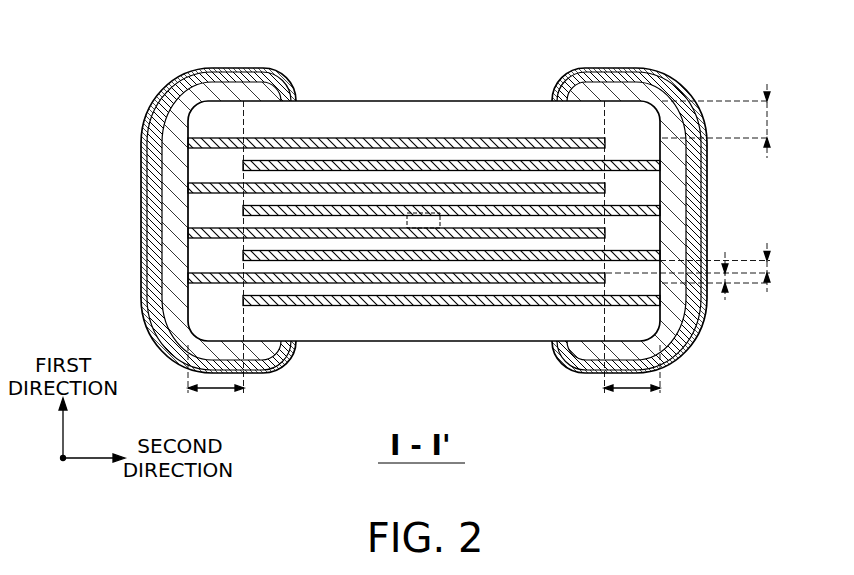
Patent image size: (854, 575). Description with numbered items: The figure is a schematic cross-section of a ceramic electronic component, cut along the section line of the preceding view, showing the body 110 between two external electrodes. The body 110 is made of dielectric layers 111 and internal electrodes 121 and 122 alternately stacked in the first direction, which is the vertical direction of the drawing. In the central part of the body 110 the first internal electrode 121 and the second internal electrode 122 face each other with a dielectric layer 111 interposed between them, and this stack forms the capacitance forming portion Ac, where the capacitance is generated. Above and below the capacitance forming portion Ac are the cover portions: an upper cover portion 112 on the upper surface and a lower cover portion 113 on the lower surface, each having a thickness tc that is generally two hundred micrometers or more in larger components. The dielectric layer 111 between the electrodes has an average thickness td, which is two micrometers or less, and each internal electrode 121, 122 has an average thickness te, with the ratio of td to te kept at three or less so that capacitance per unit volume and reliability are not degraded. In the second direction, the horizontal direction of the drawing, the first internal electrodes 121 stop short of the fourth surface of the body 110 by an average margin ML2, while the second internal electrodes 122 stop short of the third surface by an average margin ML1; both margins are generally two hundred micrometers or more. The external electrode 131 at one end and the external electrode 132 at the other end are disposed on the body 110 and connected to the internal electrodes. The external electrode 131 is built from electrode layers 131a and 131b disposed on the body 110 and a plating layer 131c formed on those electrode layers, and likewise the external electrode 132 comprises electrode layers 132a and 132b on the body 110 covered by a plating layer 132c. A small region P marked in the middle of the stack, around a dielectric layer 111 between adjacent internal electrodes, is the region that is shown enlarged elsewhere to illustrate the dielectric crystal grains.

The body 110 is at (357, 100).
The dielectric layer 111 is at (295, 175).
The upper cover portion 112 is at (420, 106).
The lower cover portion 113 is at (437, 323).
The first internal electrode 121 is at (467, 137).
The second internal electrode 122 is at (537, 160).
The external electrode 131 is at (158, 220).
The electrode layer 131a is at (176, 189).
The electrode layer 131b is at (150, 217).
The plating layer 131c is at (70, 180).
The external electrode 132 is at (694, 220).
The electrode layer 132a is at (674, 178).
The electrode layer 132b is at (697, 203).
The plating layer 132c is at (710, 226).
The region P is at (428, 229).
The capacitance forming portion Ac is at (525, 304).
The average size of region in which second internal electrodes are spaced apart from ML1 is at (216, 382).
The average size of region in which first internal electrodes are spaced apart from ML2 is at (632, 382).
The thickness of cover portion tc is at (729, 121).
The average thickness of dielectric layer td is at (702, 267).
The average thickness of internal electrode te is at (716, 276).